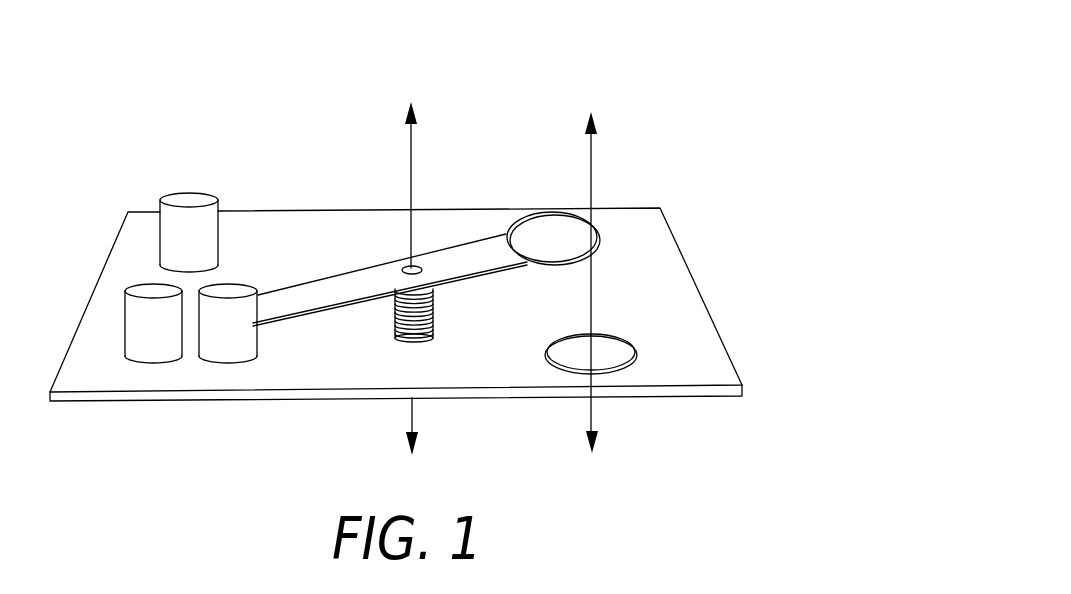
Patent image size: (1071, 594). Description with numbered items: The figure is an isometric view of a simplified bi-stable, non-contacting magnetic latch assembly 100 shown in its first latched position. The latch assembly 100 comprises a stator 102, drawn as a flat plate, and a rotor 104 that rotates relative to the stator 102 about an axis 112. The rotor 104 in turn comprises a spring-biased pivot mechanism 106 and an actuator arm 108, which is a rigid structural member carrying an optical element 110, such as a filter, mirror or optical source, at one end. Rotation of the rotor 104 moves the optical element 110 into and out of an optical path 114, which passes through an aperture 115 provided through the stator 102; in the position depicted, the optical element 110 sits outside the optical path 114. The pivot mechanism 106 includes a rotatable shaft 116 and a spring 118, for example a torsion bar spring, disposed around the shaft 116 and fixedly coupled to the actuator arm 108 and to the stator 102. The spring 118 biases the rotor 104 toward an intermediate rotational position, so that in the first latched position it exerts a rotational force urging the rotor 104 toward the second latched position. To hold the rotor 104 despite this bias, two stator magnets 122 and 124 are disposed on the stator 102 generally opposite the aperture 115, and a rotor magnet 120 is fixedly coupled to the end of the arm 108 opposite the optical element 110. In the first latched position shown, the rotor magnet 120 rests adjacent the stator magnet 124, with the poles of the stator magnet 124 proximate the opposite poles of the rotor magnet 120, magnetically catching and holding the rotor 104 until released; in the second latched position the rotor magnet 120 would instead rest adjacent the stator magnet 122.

The magnetic latch assembly 100 is at (748, 55).
The stator 102 is at (314, 377).
The rotor 104 is at (426, 279).
The spring-biased pivot mechanism 106 is at (455, 308).
The actuator arm 108 is at (277, 310).
The optical element 110 is at (545, 250).
The axis 112 is at (413, 185).
The optical path 114 is at (593, 185).
The aperture 115 is at (618, 353).
The rotatable shaft 116 is at (410, 265).
The spring 118 is at (418, 342).
The rotor magnet 120 is at (227, 285).
The stator magnet 122 is at (188, 195).
The stator magnet 124 is at (152, 362).